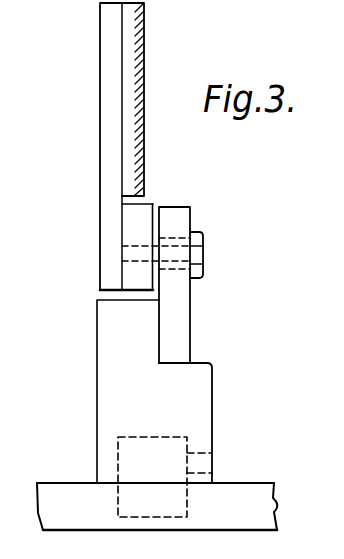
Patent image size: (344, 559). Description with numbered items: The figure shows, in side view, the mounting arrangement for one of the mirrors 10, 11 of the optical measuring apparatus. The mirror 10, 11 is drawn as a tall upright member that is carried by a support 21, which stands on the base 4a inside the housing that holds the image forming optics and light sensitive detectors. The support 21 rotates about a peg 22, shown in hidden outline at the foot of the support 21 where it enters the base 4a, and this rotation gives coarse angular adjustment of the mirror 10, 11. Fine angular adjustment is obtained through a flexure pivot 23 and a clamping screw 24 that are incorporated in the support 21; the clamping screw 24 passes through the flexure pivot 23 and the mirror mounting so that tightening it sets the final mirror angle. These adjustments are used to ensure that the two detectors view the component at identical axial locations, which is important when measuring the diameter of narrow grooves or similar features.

The mirror 10 is at (134, 34).
The mirror 11 is at (126, 146).
The flexure pivot 23 is at (173, 213).
The clamping screw 24 is at (203, 258).
The support 21 is at (165, 395).
The peg 22 is at (160, 460).
The base 4a is at (52, 492).